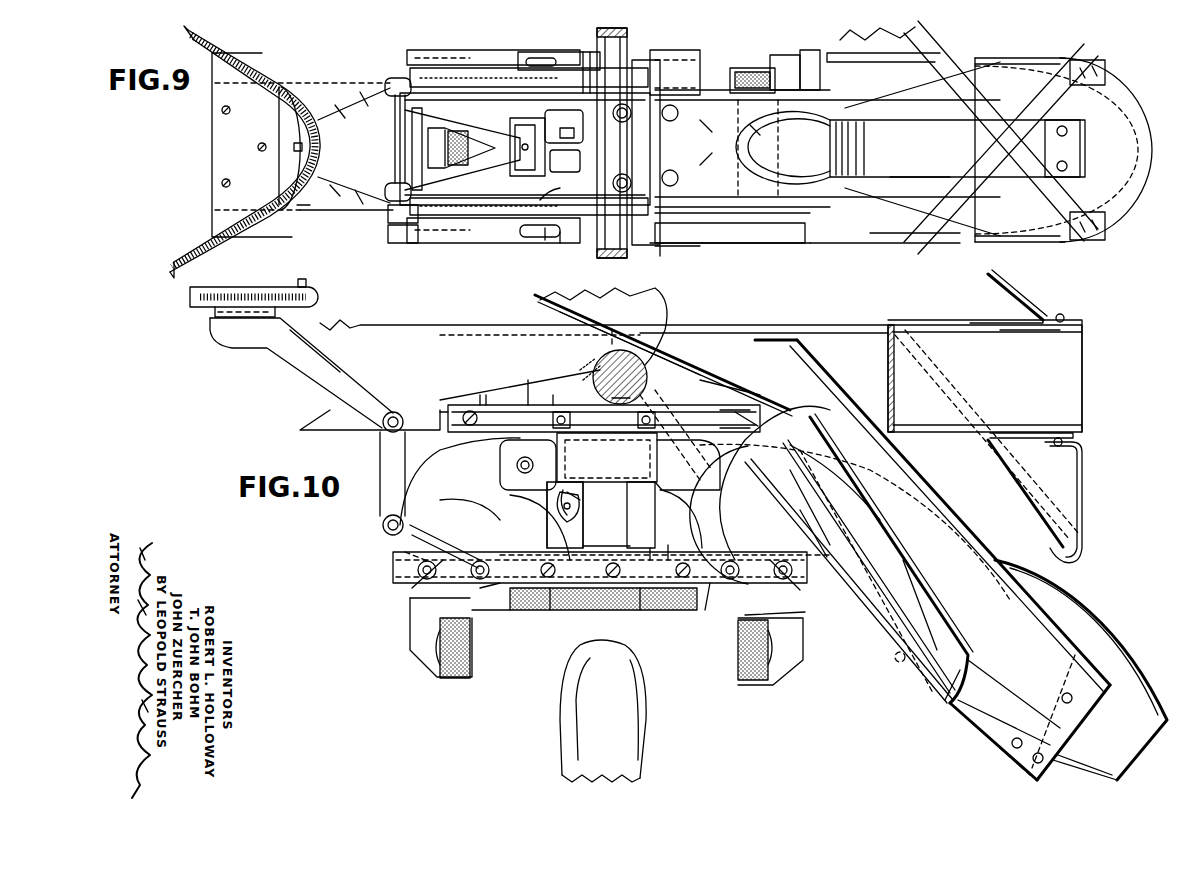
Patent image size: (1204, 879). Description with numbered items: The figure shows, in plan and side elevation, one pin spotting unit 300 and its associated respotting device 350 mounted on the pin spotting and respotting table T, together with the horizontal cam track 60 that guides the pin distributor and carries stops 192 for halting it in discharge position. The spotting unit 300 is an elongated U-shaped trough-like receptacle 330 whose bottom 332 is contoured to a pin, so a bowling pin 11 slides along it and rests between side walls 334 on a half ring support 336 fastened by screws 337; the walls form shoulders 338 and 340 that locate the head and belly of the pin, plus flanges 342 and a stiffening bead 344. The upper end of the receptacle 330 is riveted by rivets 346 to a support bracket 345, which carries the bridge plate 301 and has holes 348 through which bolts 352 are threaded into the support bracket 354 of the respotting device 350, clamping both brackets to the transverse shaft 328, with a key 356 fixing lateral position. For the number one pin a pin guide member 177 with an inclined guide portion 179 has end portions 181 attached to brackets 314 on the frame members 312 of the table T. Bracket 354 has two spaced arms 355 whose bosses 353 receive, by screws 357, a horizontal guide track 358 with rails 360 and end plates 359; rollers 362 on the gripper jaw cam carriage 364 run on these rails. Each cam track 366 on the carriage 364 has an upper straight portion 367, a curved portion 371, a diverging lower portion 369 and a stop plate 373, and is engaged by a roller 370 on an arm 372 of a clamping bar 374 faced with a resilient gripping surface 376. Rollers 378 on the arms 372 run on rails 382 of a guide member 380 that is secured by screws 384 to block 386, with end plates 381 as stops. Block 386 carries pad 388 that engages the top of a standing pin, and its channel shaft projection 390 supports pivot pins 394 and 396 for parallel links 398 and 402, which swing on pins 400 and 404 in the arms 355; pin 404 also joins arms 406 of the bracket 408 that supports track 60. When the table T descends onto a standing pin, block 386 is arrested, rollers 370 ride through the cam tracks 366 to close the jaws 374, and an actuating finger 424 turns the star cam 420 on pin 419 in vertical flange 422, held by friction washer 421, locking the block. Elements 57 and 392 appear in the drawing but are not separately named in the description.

In FIG. 9, the bowling pin 11 is at (820, 118).
In FIG. 10, the bowling pin 11 is at (632, 720).
In FIG. 9, the mounting plate 57 is at (220, 236).
In FIG. 9, the horizontal cam track 60 is at (270, 80).
In FIG. 10, the horizontal cam track 60 is at (192, 297).
In FIG. 9, the pin guide member 177 is at (892, 178).
In FIG. 10, the pin guide member 177 is at (1015, 296).
In FIG. 10, the inclined elongated guide portion 179 is at (978, 452).
In FIG. 9, the end portions 181 is at (1082, 163).
In FIG. 10, the end portions 181 is at (1062, 316).
In FIG. 9, the stops 192 is at (294, 150).
In FIG. 10, the stops 192 is at (306, 283).
In FIG. 9, the pin spotting unit 300 is at (780, 244).
In FIG. 10, the pin spotting unit 300 is at (903, 684).
In FIG. 10, the bridge plate 301 is at (660, 300).
In FIG. 9, the frame members 312 is at (946, 58).
In FIG. 10, the frame members 312 is at (366, 330).
In FIG. 9, the brackets 314 is at (1082, 128).
In FIG. 10, the brackets 314 is at (1000, 323).
In FIG. 9, the transverse shaft 328 is at (652, 50).
In FIG. 10, the transverse shaft 328 is at (604, 358).
In FIG. 9, the trough-like receptacle 330 is at (848, 243).
In FIG. 10, the trough-like receptacle 330 is at (870, 621).
In FIG. 9, the bottom 332 is at (740, 148).
In FIG. 10, the bottom 332 is at (893, 657).
In FIG. 9, the side walls 334 is at (1005, 58).
In FIG. 10, the side walls 334 is at (948, 520).
In FIG. 9, the half ring support 336 is at (1105, 73).
In FIG. 10, the half ring support 336 is at (1108, 690).
In FIG. 10, the screws 337 is at (1073, 700).
In FIG. 9, the pin positioning shoulders 338 is at (892, 99).
In FIG. 10, the pin positioning shoulders 338 is at (775, 500).
In FIG. 9, the pin positioning shoulders 340 is at (882, 56).
In FIG. 10, the pin positioning shoulders 340 is at (958, 712).
In FIG. 9, the flanges 342 is at (700, 244).
In FIG. 9, the stiffening bead 344 is at (870, 236).
In FIG. 10, the stiffening bead 344 is at (845, 395).
In FIG. 9, the support bracket 345 is at (608, 258).
In FIG. 10, the support bracket 345 is at (665, 330).
In FIG. 9, the rivets 346 is at (664, 250).
In FIG. 10, the rivets 346 is at (725, 378).
In FIG. 10, the holes 348 is at (592, 338).
In FIG. 9, the respotting device 350 is at (380, 51).
In FIG. 10, the respotting device 350 is at (544, 640).
In FIG. 9, the bolts 352 is at (678, 173).
In FIG. 10, the bolts 352 is at (612, 330).
In FIG. 9, the bosses 353 is at (548, 60).
In FIG. 9, the support bracket 354 is at (586, 92).
In FIG. 10, the support bracket 354 is at (528, 400).
In FIG. 9, the spaced arms 355 is at (388, 86).
In FIG. 10, the spaced arms 355 is at (380, 470).
In FIG. 10, the key 356 is at (612, 398).
In FIG. 10, the screws 357 is at (449, 408).
In FIG. 9, the horizontal guide track 358 is at (500, 68).
In FIG. 10, the horizontal guide track 358 is at (745, 420).
In FIG. 10, the plates 359 is at (442, 412).
In FIG. 10, the guide rails 360 is at (482, 403).
In FIG. 9, the rollers 362 is at (545, 242).
In FIG. 10, the rollers 362 is at (553, 410).
In FIG. 9, the gripper jaw cam carriage 364 is at (560, 244).
In FIG. 10, the gripper jaw cam carriage 364 is at (627, 482).
In FIG. 9, the cam tracks 366 is at (446, 52).
In FIG. 10, the cam tracks 366 is at (672, 505).
In FIG. 10, the upper straight portion 367 is at (568, 430).
In FIG. 10, the lower diverging portion 369 is at (500, 530).
In FIG. 9, the roller 370 is at (420, 243).
In FIG. 10, the roller 370 is at (418, 588).
In FIG. 10, the curved portion 371 is at (520, 495).
In FIG. 9, the upwardly extending arms 372 is at (410, 230).
In FIG. 10, the upwardly extending arms 372 is at (470, 610).
In FIG. 10, the stop plate 373 is at (405, 550).
In FIG. 9, the pin gripping jaw 374 is at (435, 147).
In FIG. 10, the pin gripping jaw 374 is at (412, 640).
In FIG. 9, the resilient gripping surface 376 is at (425, 117).
In FIG. 10, the resilient gripping surface 376 is at (463, 678).
In FIG. 9, the rollers 378 is at (410, 216).
In FIG. 10, the rollers 378 is at (490, 588).
In FIG. 9, the elongated guide member 380 is at (545, 202).
In FIG. 10, the elongated guide member 380 is at (668, 545).
In FIG. 10, the end plates 381 is at (393, 567).
In FIG. 10, the rails 382 is at (650, 560).
In FIG. 10, the screws 384 is at (551, 610).
In FIG. 10, the block 386 is at (584, 548).
In FIG. 10, the pad 388 is at (640, 610).
In FIG. 9, the channel shaft projection 390 is at (540, 122).
In FIG. 9, the channel 392 is at (512, 125).
In FIG. 10, the channel 392 is at (553, 505).
In FIG. 10, the pivot pin 394 is at (528, 611).
In FIG. 10, the pivot pin 396 is at (505, 482).
In FIG. 10, the link 398 is at (432, 525).
In FIG. 10, the pin 400 is at (383, 523).
In FIG. 10, the link 402 is at (442, 452).
In FIG. 9, the horizontal pin 404 is at (405, 162).
In FIG. 10, the horizontal pin 404 is at (382, 422).
In FIG. 9, the spaced arms 406 is at (348, 205).
In FIG. 10, the spaced arms 406 is at (347, 377).
In FIG. 9, the bracket 408 is at (302, 208).
In FIG. 10, the bracket 408 is at (209, 322).
In FIG. 10, the pin 419 is at (563, 490).
In FIG. 10, the star cam 420 is at (579, 498).
In FIG. 10, the friction washer 421 is at (583, 506).
In FIG. 10, the vertical flange 422 is at (575, 490).
In FIG. 10, the actuating finger 424 is at (580, 370).
In FIG. 10, the pin spotting and respotting table T is at (1090, 331).